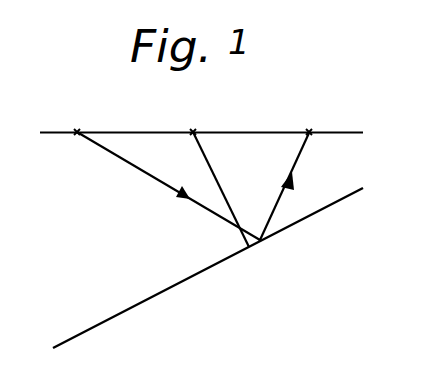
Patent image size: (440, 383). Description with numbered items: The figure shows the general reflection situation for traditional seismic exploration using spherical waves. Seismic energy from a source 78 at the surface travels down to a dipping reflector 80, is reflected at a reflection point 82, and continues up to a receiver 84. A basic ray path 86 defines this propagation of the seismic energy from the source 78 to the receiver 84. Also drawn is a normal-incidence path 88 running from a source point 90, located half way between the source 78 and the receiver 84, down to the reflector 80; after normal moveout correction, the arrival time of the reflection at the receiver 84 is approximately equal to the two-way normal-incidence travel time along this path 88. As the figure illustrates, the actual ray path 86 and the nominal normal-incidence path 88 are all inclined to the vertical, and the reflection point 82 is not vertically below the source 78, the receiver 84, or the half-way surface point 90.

The source 78 is at (76, 130).
The dipping reflector 80 is at (158, 295).
The reflection point 82 is at (262, 242).
The receiver 84 is at (310, 132).
The basic ray path 86 is at (137, 176).
The normal-incidence path 88 is at (210, 165).
The source point 90 is at (192, 130).